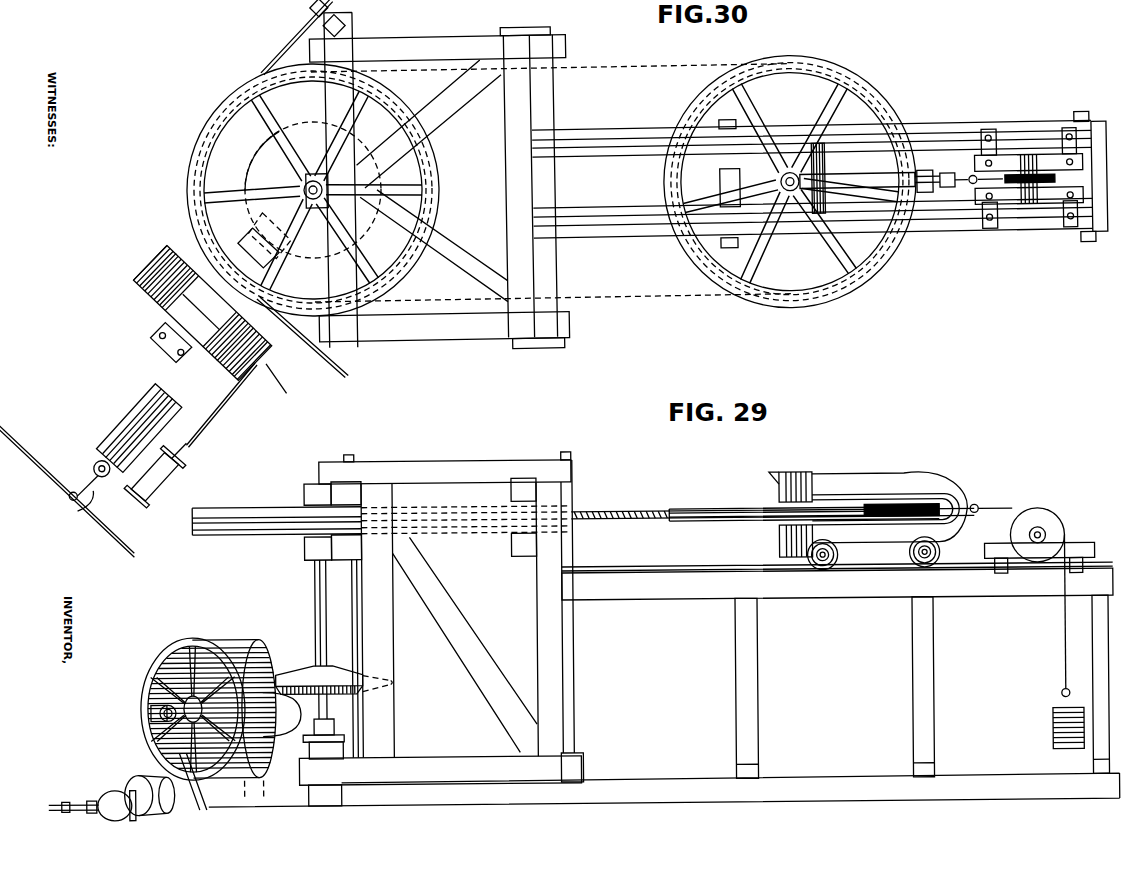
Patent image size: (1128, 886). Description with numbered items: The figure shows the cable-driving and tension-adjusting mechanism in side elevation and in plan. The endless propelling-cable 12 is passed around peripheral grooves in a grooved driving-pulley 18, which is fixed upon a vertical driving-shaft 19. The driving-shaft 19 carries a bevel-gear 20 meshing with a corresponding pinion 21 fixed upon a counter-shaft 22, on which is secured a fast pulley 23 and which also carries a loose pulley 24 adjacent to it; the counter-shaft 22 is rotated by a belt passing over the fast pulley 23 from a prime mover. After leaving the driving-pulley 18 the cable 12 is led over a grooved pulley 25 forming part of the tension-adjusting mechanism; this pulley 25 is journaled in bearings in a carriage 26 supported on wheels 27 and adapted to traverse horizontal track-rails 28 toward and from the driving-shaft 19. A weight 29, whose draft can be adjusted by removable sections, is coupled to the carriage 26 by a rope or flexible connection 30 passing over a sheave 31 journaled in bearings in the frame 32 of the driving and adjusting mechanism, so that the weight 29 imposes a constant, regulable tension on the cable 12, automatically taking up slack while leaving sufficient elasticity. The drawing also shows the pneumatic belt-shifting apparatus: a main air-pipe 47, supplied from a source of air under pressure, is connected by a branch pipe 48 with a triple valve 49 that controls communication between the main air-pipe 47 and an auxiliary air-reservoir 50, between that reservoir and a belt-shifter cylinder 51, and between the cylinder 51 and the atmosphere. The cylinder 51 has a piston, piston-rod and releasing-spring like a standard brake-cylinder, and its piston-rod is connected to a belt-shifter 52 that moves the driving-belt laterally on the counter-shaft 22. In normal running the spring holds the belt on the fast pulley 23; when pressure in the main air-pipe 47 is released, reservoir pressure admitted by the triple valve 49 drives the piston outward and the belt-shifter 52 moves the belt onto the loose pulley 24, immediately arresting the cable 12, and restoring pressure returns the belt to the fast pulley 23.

In FIG. 30, the endless propelling-cable 12 is at (519, 196).
In FIG. 29, the endless propelling-cable 12 is at (686, 509).
In FIG. 30, the grooved driving-pulley 18 is at (313, 190).
In FIG. 29, the grooved driving-pulley 18 is at (280, 503).
In FIG. 30, the vertical driving-shaft 19 is at (304, 187).
In FIG. 29, the vertical driving-shaft 19 is at (314, 585).
In FIG. 30, the bevel-gear 20 is at (312, 133).
In FIG. 29, the bevel-gear 20 is at (298, 675).
In FIG. 29, the pinion 21 is at (311, 746).
In FIG. 30, the counter-shaft 22 is at (150, 349).
In FIG. 29, the counter-shaft 22 is at (156, 705).
In FIG. 30, the fast pulley 23 is at (160, 291).
In FIG. 29, the fast pulley 23 is at (215, 643).
In FIG. 30, the loose pulley 24 is at (157, 247).
In FIG. 29, the loose pulley 24 is at (248, 642).
In FIG. 30, the grooved pulley 25 is at (790, 181).
In FIG. 29, the grooved pulley 25 is at (700, 528).
In FIG. 30, the carriage 26 is at (882, 190).
In FIG. 29, the carriage 26 is at (868, 501).
In FIG. 29, the wheels 27 is at (828, 570).
In FIG. 30, the horizontal track-rails 28 is at (612, 145).
In FIG. 29, the horizontal track-rails 28 is at (837, 558).
In FIG. 29, the weight 29 is at (1046, 728).
In FIG. 29, the rope or flexible connection 30 is at (1045, 616).
In FIG. 30, the sheave 31 is at (1008, 170).
In FIG. 29, the sheave 31 is at (1048, 522).
In FIG. 30, the frame 32 is at (956, 130).
In FIG. 29, the frame 32 is at (663, 627).
In FIG. 30, the main air-pipe 47 is at (67, 480).
In FIG. 30, the branch pipe 48 is at (86, 515).
In FIG. 30, the triple valve 49 is at (92, 460).
In FIG. 29, the triple valve 49 is at (90, 797).
In FIG. 30, the auxiliary air-reservoir 50 is at (125, 414).
In FIG. 29, the auxiliary air-reservoir 50 is at (113, 785).
In FIG. 30, the belt-shifter cylinder 51 is at (165, 488).
In FIG. 29, the belt-shifter cylinder 51 is at (142, 775).
In FIG. 30, the belt-shifter 52 is at (236, 404).
In FIG. 29, the belt-shifter 52 is at (270, 785).